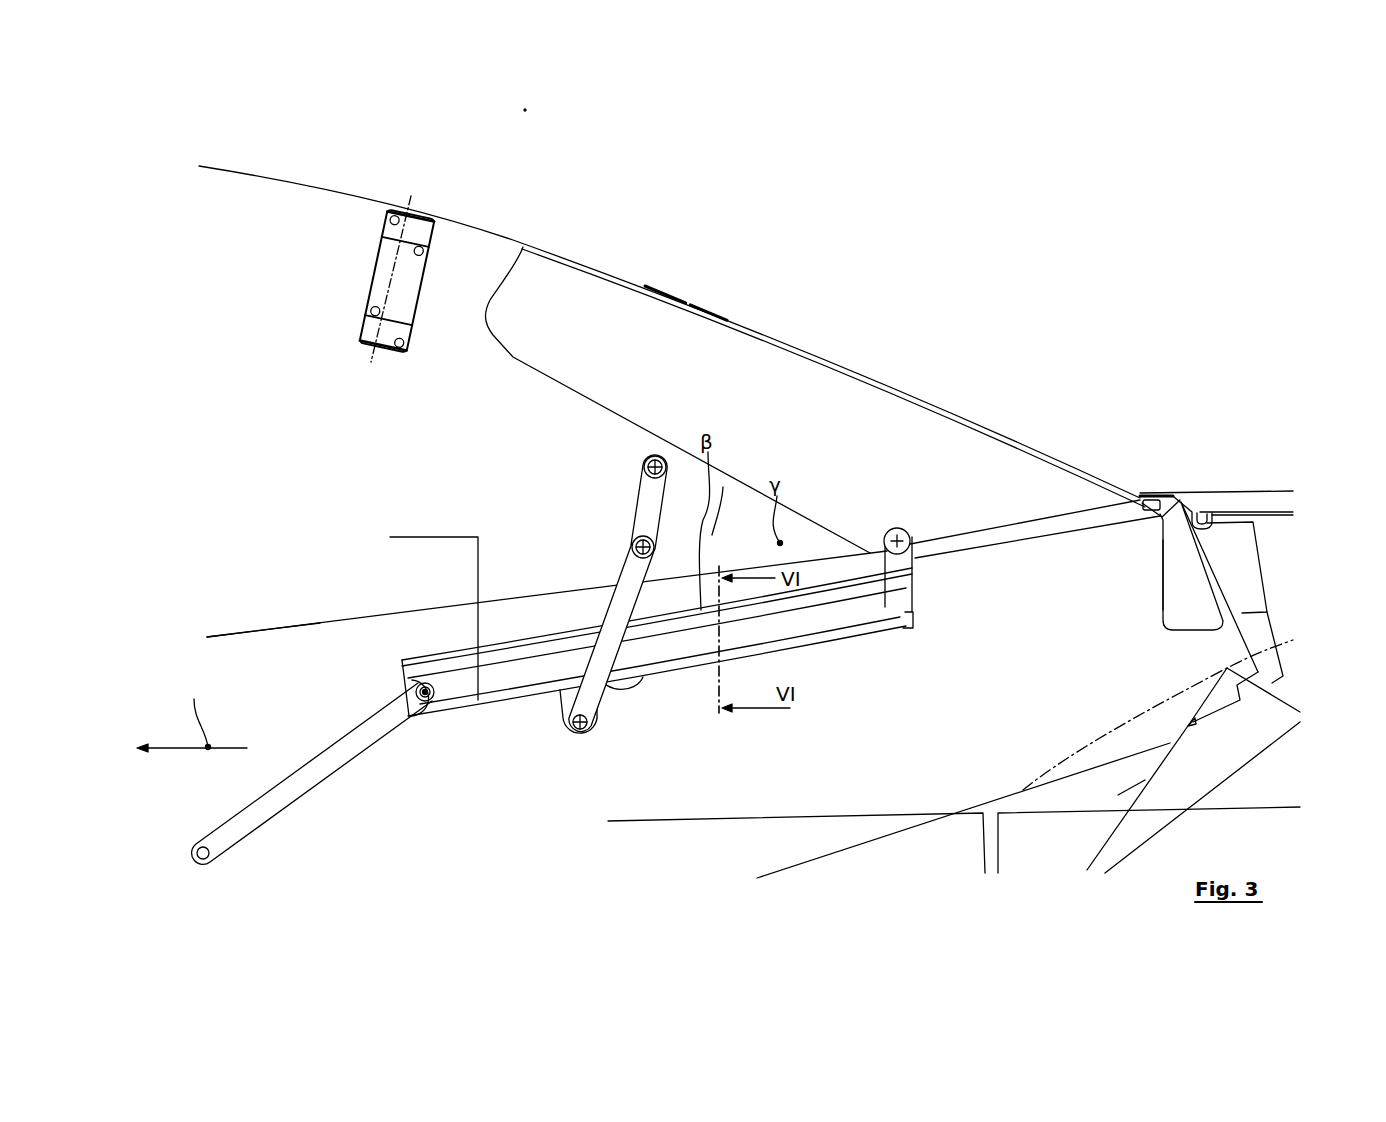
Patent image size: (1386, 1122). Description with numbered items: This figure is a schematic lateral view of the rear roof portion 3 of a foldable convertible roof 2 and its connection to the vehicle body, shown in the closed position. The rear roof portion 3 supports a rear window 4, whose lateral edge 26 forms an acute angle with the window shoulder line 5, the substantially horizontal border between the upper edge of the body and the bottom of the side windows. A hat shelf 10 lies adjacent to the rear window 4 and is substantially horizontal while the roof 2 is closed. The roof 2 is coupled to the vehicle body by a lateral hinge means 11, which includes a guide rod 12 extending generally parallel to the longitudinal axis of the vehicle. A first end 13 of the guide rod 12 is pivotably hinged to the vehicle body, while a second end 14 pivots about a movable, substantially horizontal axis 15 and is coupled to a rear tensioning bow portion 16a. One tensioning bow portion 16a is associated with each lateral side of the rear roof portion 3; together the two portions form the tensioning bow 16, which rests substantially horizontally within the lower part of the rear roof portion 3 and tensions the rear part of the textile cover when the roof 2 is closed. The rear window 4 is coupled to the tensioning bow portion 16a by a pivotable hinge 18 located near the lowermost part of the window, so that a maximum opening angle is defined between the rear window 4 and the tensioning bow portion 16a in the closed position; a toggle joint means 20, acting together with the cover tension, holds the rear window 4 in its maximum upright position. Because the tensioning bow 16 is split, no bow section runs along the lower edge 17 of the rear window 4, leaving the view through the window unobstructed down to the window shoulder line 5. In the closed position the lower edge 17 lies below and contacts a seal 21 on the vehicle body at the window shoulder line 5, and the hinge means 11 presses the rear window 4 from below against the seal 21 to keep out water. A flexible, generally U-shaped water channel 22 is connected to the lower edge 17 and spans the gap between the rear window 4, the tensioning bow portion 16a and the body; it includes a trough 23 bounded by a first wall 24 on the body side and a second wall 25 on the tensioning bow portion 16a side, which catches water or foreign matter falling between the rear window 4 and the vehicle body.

The roof 2 is at (338, 179).
The rear roof portion 3 is at (551, 204).
The rear window 4 is at (812, 379).
The window shoulder line 5 is at (319, 621).
The hat shelf 10 is at (818, 545).
The lateral hinge means 11 is at (292, 714).
The guide rod 12 is at (347, 752).
The first end 13 is at (244, 858).
The second end 14 is at (438, 726).
The axis 15 is at (424, 688).
The tensioning bow 16 is at (601, 705).
The tensioning bow portion 16a is at (807, 622).
The lower edge 17 is at (1178, 504).
The pivotable hinge 18 is at (905, 530).
The toggle joint means 20 is at (598, 541).
The seal 21 is at (1153, 503).
The water channel 22 is at (1161, 642).
The trough 23 is at (1203, 620).
The first wall 24 is at (1228, 610).
The second wall 25 is at (1163, 593).
The lateral edge 26 is at (567, 390).